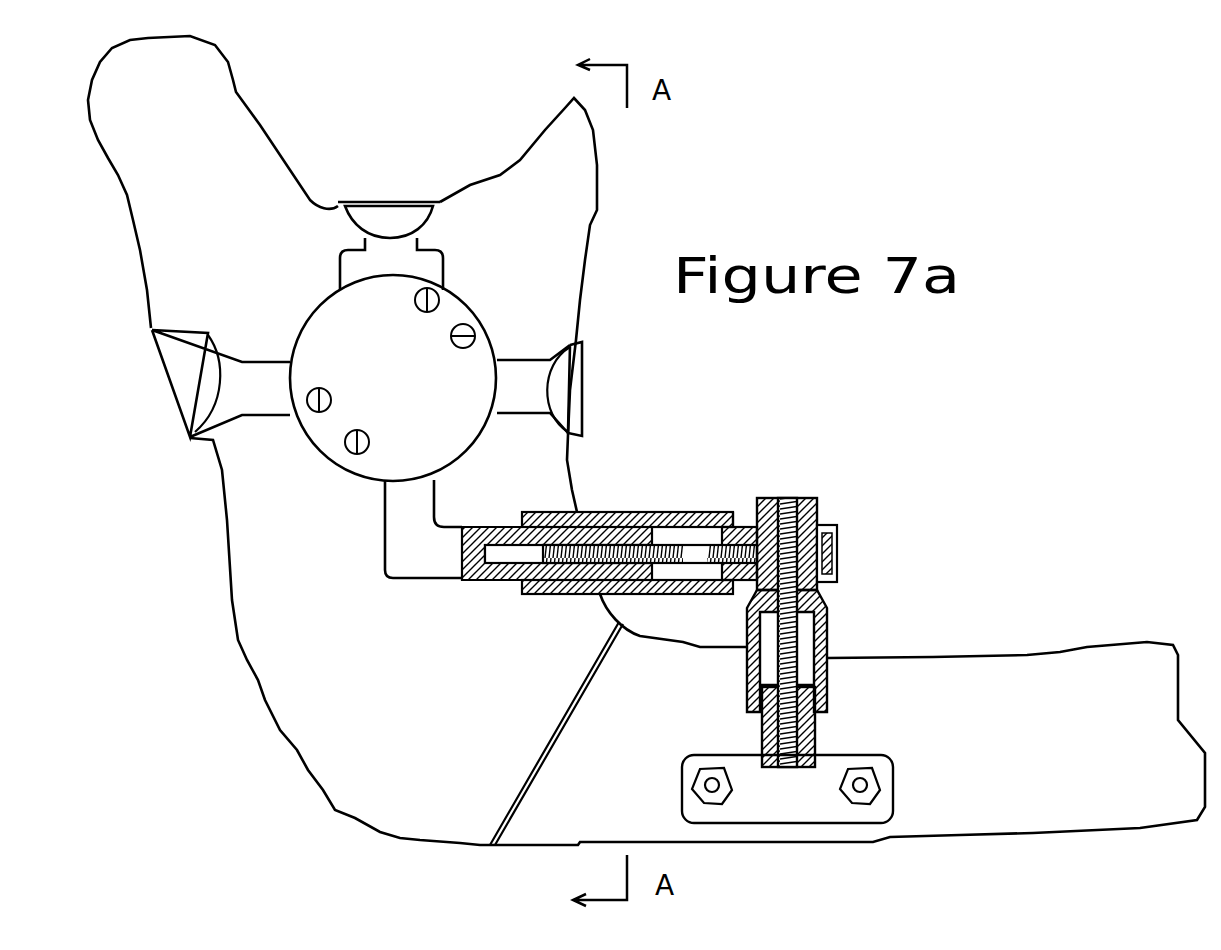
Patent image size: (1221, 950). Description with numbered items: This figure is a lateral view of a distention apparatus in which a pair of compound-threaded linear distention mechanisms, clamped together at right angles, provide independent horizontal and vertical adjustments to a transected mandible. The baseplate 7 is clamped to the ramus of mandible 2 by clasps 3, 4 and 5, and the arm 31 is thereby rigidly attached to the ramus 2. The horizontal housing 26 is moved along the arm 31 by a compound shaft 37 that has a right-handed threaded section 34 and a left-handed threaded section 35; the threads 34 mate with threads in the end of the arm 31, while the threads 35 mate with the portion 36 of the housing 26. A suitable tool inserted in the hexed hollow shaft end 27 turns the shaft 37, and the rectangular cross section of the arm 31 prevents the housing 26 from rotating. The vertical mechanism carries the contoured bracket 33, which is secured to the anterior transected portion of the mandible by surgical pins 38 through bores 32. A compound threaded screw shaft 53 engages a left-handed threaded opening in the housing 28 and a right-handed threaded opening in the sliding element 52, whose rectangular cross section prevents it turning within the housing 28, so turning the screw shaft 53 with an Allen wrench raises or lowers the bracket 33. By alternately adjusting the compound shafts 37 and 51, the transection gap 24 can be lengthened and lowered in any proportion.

The ramus of mandible 2 is at (236, 92).
The clasp 3 is at (190, 437).
The clasp 4 is at (388, 207).
The clasp 5 is at (584, 373).
The baseplate 7 is at (320, 305).
The transection gap 24 is at (475, 843).
The horizontal housing 26 is at (543, 594).
The shaft end 27 is at (837, 552).
The housing 28 is at (813, 498).
The arm 31 is at (517, 525).
The screw bores 32 is at (700, 800).
The contoured bracket 33 is at (752, 757).
The right-handed threaded section 34 is at (662, 547).
The left-handed threaded section 35 is at (698, 520).
The portion of extension 36 is at (752, 525).
The compound shaft 37 is at (698, 563).
The surgical pins 38 is at (948, 772).
The compound shaft 51 is at (790, 642).
The sliding element 52 is at (817, 725).
The compound threaded screw shaft 53 is at (787, 498).